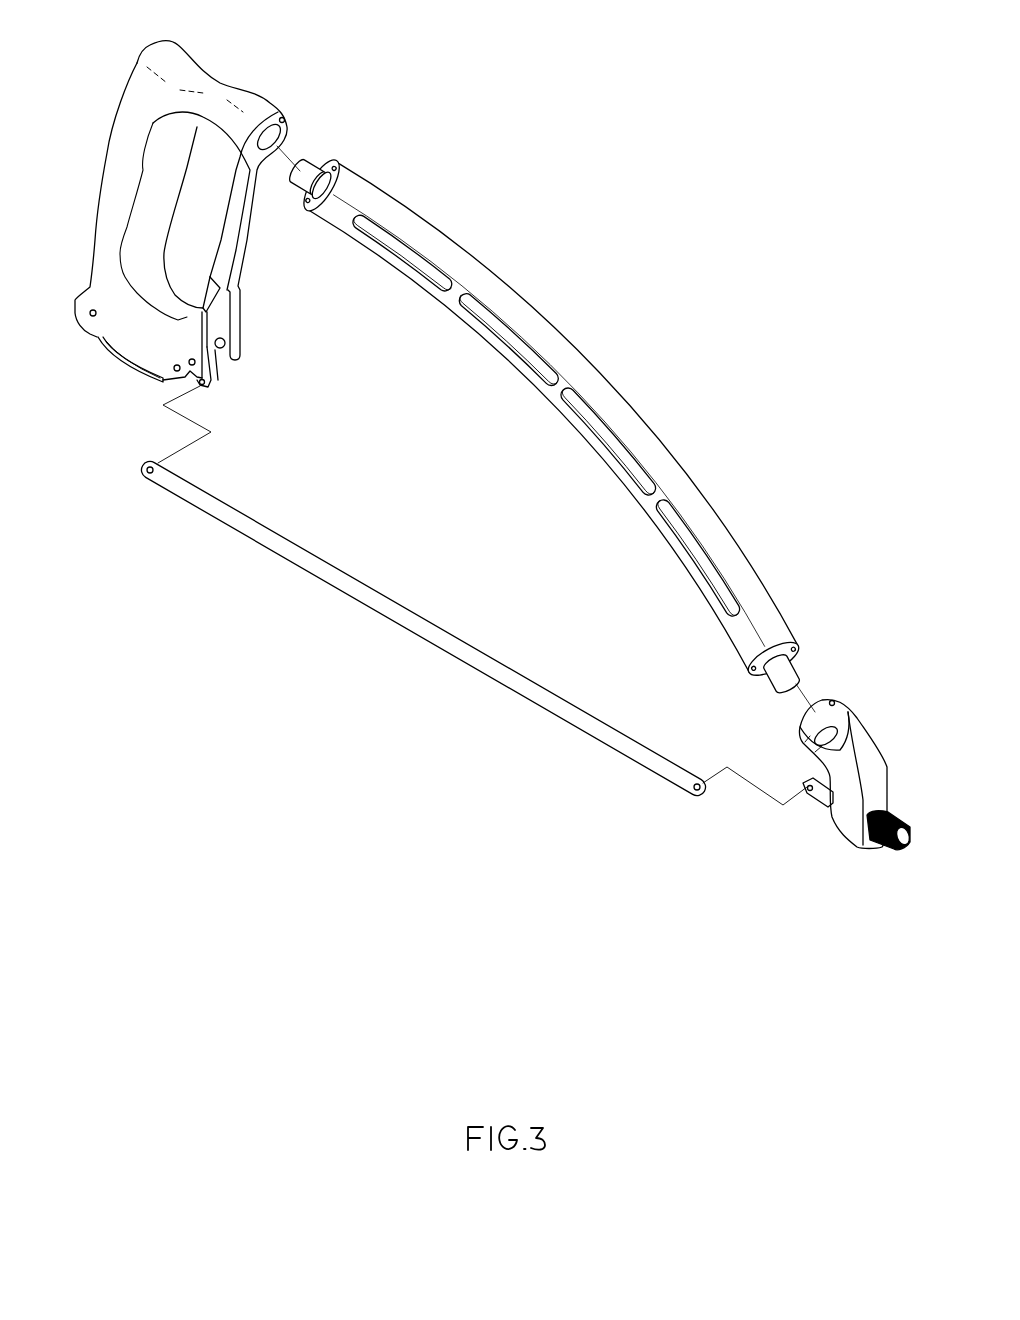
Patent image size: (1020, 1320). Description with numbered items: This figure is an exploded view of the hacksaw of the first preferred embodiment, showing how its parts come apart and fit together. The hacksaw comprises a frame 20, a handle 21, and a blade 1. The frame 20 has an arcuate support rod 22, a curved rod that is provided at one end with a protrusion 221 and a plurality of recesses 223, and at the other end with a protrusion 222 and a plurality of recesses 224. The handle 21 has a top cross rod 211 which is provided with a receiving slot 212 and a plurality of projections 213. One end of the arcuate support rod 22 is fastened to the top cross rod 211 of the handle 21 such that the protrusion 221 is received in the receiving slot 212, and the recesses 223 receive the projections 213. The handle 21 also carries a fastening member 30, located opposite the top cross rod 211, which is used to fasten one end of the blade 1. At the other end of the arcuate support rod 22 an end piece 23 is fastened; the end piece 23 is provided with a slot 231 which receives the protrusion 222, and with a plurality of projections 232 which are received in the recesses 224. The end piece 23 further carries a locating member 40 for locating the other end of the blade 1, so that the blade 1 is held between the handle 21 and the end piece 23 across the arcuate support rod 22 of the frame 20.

The blade 1 is at (476, 664).
The frame 20 is at (574, 300).
The handle 21 is at (104, 177).
The arcuate support rod 22 is at (614, 420).
The end piece 23 is at (872, 757).
The fastening member 30 is at (121, 368).
The locating member 40 is at (827, 808).
The top cross rod 211 is at (213, 93).
The receiving slot 212 is at (290, 133).
The projections 213 is at (283, 117).
The protrusion 221 is at (318, 164).
The protrusion 222 is at (787, 664).
The recesses 223 is at (305, 212).
The recesses 224 is at (794, 642).
The slot 231 is at (838, 709).
The projections 232 is at (831, 703).